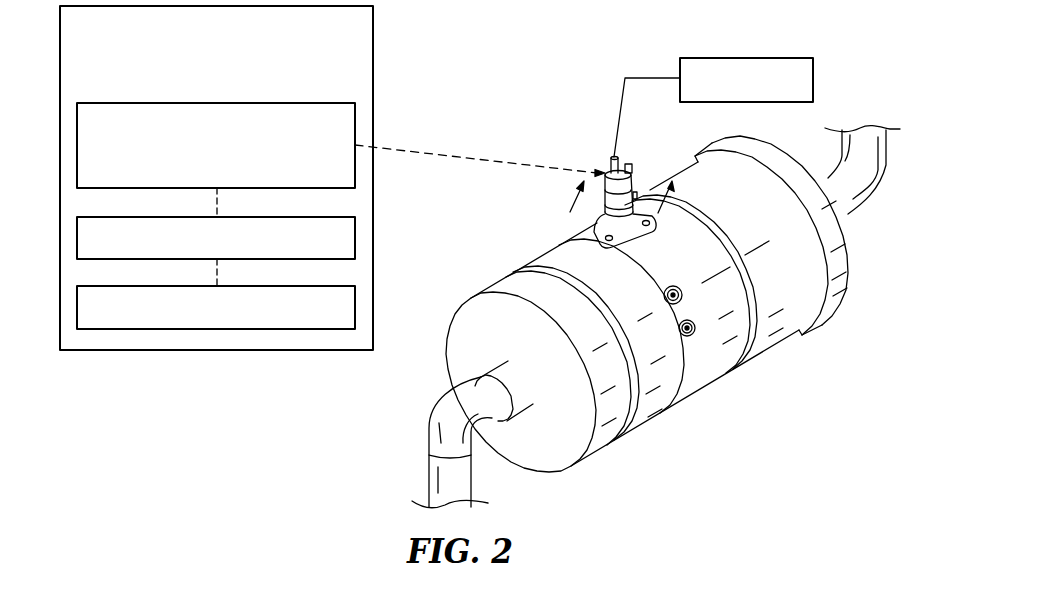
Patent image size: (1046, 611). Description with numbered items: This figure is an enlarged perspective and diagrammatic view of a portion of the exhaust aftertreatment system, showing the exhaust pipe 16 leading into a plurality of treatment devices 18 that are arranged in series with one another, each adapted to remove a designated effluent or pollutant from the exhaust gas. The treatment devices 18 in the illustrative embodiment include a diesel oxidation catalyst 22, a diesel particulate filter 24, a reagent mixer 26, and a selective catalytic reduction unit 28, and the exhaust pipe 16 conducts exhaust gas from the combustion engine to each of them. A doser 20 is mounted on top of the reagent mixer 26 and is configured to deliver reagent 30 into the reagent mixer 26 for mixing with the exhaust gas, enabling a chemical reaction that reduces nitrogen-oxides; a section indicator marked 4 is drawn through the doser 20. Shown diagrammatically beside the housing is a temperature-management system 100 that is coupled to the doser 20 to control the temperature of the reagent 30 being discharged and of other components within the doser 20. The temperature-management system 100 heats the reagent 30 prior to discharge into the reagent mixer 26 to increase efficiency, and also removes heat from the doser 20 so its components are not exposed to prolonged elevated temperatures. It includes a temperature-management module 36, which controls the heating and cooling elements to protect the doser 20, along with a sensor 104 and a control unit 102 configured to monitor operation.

The temperature-management system 100 is at (373, 50).
The temperature-management module 36 is at (355, 117).
The sensor 104 is at (355, 235).
The control unit 102 is at (355, 305).
The reagent 30 is at (813, 77).
The doser 20 is at (646, 154).
The section line 4- 4 is at (688, 197).
The treatment devices 18 is at (867, 261).
The exhaust pipe 16 is at (416, 426).
The diesel oxidation catalyst 22 is at (612, 440).
The diesel particulate filter 24 is at (652, 408).
The reagent mixer 26 is at (710, 366).
The selective catalytic reduction unit 28 is at (783, 316).